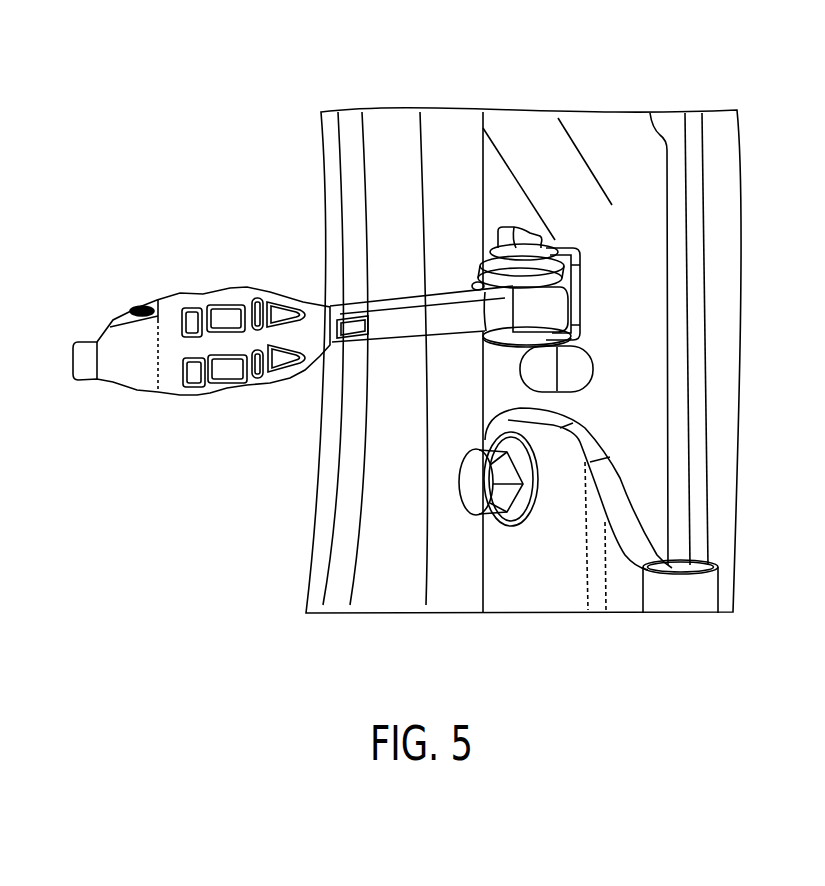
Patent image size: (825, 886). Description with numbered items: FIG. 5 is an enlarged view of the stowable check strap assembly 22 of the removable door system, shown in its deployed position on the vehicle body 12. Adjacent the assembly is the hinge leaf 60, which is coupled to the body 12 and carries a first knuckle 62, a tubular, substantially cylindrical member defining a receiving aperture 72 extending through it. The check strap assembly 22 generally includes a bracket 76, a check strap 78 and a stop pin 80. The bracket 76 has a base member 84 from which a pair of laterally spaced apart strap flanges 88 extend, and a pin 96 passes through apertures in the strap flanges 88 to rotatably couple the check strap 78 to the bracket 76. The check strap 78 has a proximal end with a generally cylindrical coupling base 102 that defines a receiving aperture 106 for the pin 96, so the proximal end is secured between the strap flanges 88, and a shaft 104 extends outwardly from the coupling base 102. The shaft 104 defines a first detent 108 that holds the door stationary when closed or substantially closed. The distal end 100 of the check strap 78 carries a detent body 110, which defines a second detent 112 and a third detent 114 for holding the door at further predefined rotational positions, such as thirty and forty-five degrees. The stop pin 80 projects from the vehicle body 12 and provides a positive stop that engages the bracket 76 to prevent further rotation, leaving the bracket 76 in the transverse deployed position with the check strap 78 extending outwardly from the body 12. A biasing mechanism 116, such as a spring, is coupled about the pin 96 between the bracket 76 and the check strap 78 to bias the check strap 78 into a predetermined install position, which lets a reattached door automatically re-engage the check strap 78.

The body 12 is at (572, 120).
The stowable check strap assembly 22 is at (389, 122).
The leaf 60 is at (563, 600).
The first knuckle 62 is at (713, 594).
The receiving aperture 72 is at (686, 565).
The bracket 76 is at (586, 228).
The check strap 78 is at (290, 260).
The stop pin 80 is at (570, 369).
The base member 84 is at (577, 298).
The strap flanges 88 is at (493, 248).
The pin 96 is at (520, 246).
The distal end 100 is at (201, 359).
The coupling base 102 is at (548, 310).
The shaft 104 is at (421, 324).
The receiving aperture 106 is at (485, 356).
The first detent 108 is at (355, 338).
The detent body 110 is at (276, 344).
The second detent 112 is at (213, 296).
The third detent 114 is at (155, 301).
The biasing mechanism 116 is at (578, 259).